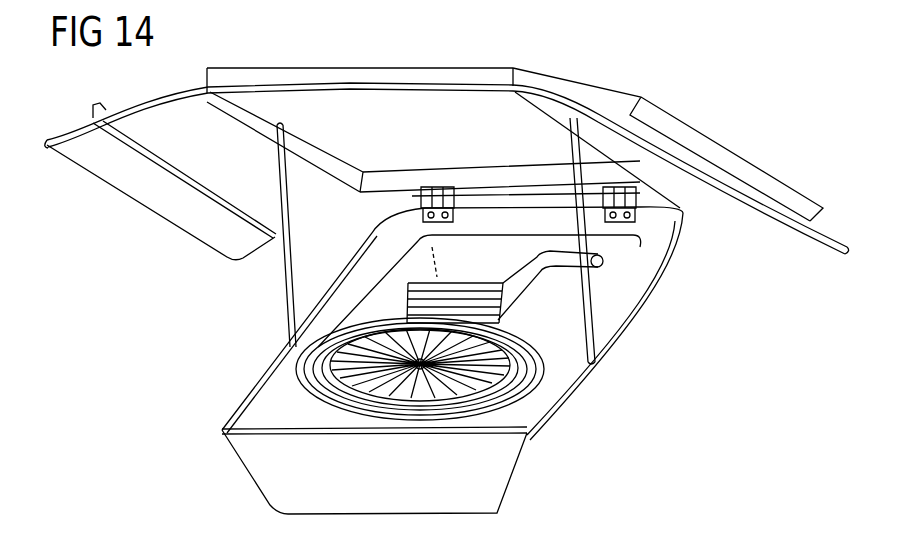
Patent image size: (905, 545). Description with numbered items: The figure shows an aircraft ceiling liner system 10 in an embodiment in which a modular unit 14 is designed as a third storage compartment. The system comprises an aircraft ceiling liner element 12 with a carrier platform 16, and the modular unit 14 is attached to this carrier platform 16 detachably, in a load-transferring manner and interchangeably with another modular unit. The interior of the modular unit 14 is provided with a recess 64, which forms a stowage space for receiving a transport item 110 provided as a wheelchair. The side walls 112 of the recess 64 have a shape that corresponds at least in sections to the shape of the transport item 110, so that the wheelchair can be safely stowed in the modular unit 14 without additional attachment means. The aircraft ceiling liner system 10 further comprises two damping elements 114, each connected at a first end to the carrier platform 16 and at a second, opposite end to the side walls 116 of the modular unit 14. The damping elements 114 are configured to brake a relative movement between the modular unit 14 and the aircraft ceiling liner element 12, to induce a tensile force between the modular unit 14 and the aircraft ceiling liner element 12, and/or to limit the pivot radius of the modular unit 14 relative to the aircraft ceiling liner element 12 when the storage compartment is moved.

The aircraft ceiling liner system 10 is at (531, 337).
The aircraft ceiling liner element 12 is at (511, 325).
The modular unit 14 is at (655, 328).
The carrier platform 16 is at (691, 121).
The recess 64 is at (390, 301).
The transport item 110 is at (379, 420).
The side walls 112 is at (542, 358).
The damping elements 114 is at (283, 292).
The side walls 116 is at (533, 430).